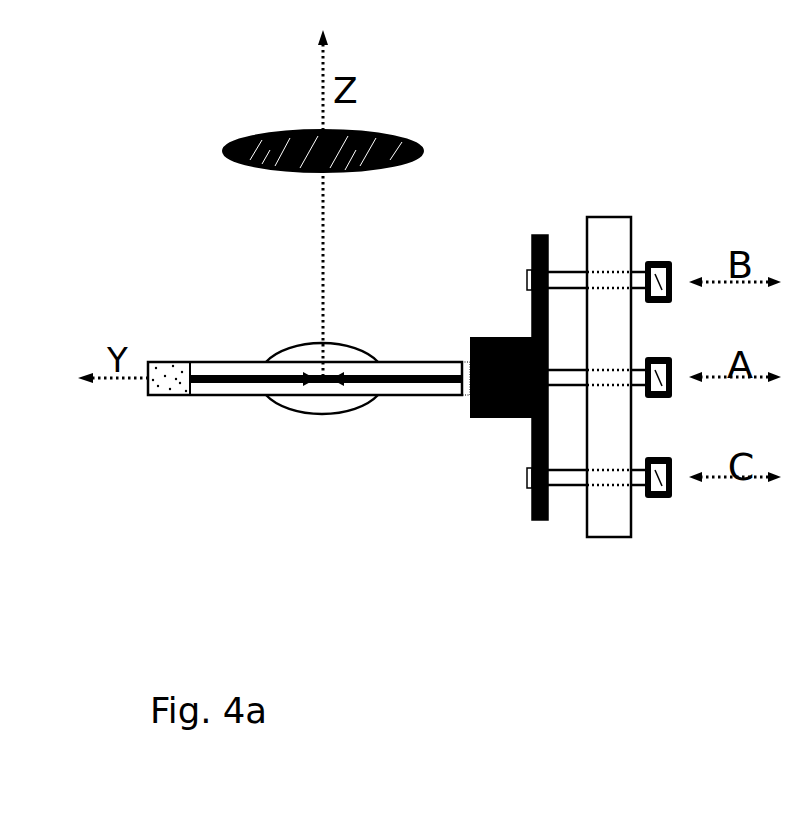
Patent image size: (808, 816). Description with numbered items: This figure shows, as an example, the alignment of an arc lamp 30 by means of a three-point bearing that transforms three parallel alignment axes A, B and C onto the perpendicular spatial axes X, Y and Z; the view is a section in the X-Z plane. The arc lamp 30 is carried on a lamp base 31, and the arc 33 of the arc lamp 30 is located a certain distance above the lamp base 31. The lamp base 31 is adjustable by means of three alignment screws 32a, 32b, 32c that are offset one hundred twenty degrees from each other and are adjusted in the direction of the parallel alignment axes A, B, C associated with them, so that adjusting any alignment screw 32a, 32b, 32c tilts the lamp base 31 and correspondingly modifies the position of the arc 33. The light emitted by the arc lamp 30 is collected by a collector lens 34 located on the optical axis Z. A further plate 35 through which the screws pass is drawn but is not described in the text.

The arc lamp 30 is at (273, 396).
The lamp base 31 is at (537, 522).
The alignment screw 32a is at (672, 399).
The alignment screw 32b is at (646, 260).
The alignment screw 32c is at (656, 499).
The arc 33 is at (328, 382).
The collector lens 34 is at (265, 130).
The support plate 35 is at (607, 538).